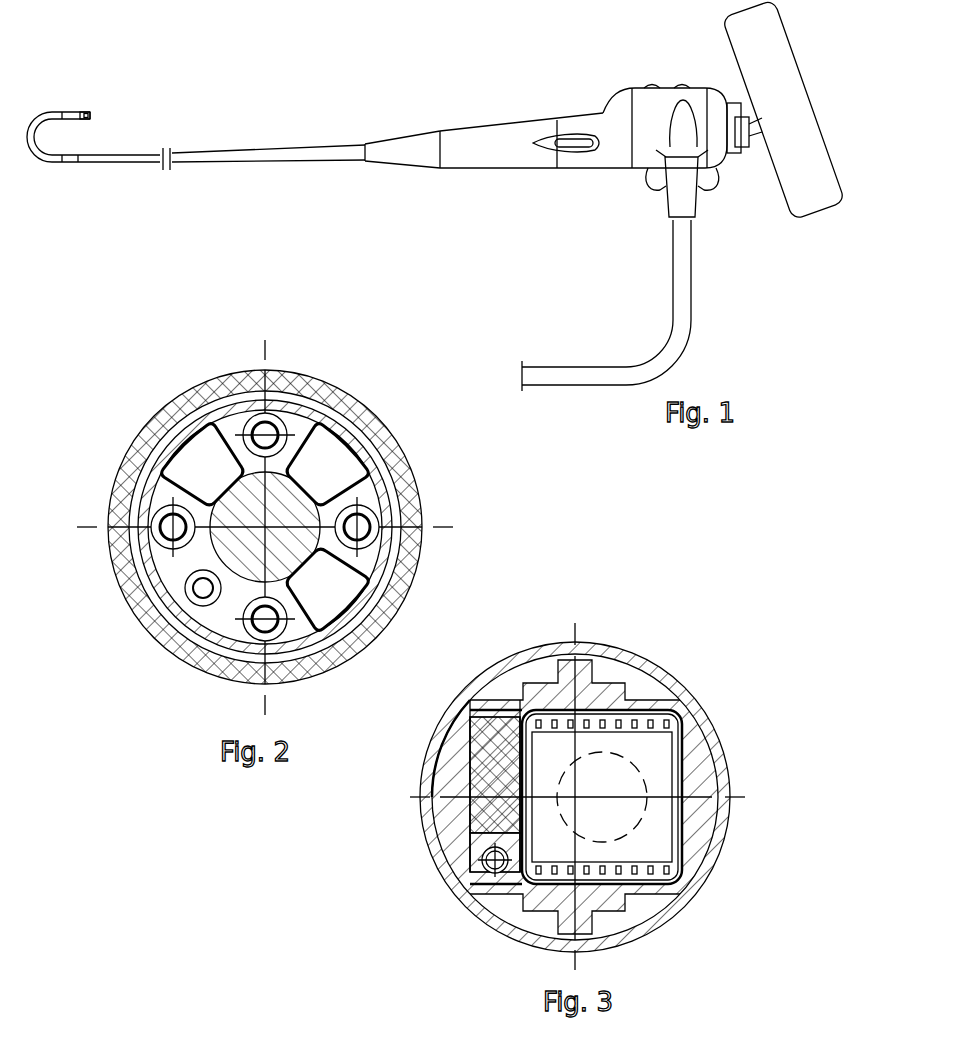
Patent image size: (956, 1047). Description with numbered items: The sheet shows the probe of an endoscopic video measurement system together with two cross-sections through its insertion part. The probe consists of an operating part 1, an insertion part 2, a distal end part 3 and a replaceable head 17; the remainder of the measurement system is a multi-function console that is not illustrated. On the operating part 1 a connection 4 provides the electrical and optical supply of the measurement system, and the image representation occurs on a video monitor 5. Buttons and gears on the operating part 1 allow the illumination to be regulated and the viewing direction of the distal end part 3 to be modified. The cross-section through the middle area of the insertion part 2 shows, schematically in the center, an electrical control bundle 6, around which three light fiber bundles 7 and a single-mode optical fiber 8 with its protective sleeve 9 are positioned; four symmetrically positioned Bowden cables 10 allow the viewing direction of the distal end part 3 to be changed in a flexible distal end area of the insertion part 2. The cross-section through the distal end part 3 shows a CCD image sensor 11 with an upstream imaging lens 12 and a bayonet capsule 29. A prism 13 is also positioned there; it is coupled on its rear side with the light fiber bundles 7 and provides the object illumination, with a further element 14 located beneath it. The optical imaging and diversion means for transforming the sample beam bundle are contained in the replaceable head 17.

In FIG. 1, the operating part 1 is at (496, 128).
In FIG. 1, the insertion part 2 is at (268, 157).
In FIG. 1, the distal end part 3 is at (68, 112).
In FIG. 1, the replaceable head 17 is at (89, 111).
In FIG. 1, the connection 4 is at (676, 199).
In FIG. 1, the video monitor 5 is at (785, 163).
In FIG. 2, the electrical control bundle 6 is at (341, 523).
In FIG. 2, the light fiber bundles 7 is at (271, 514).
In FIG. 2, the single-mode optical fiber 8 is at (161, 629).
In FIG. 2, the protective sleeve 9 is at (184, 652).
In FIG. 2, the light guide channel 10 is at (265, 523).
In FIG. 3, the CCD image sensor 11 is at (668, 745).
In FIG. 3, the imaging lens 12 is at (647, 792).
In FIG. 3, the prism 13 is at (482, 758).
In FIG. 3, the cable lead 14 is at (492, 873).
In FIG. 3, the bayonet capsule 29 is at (584, 669).